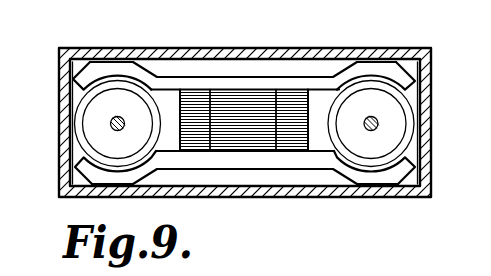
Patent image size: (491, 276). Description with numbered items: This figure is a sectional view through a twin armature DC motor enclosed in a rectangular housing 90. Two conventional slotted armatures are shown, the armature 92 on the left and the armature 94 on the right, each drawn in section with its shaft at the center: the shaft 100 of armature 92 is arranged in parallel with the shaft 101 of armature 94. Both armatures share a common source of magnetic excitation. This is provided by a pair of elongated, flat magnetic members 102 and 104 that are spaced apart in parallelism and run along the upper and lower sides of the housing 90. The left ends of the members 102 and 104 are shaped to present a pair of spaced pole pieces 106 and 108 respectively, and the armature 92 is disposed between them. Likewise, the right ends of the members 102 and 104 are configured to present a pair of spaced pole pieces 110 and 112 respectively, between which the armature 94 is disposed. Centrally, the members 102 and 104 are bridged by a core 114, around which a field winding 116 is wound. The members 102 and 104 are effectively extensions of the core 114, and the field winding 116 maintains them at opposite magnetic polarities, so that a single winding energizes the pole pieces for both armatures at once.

The rectangular housing 90 is at (372, 49).
The armature 92 is at (78, 98).
The armature 94 is at (408, 102).
The shaft 100 is at (111, 126).
The shaft 101 is at (379, 126).
The magnetic member 102 is at (309, 76).
The magnetic member 104 is at (300, 180).
The pole piece 106 is at (83, 72).
The pole piece 108 is at (90, 173).
The pole piece 110 is at (417, 80).
The pole piece 112 is at (409, 172).
The core 114 is at (198, 105).
The field winding 116 is at (253, 148).